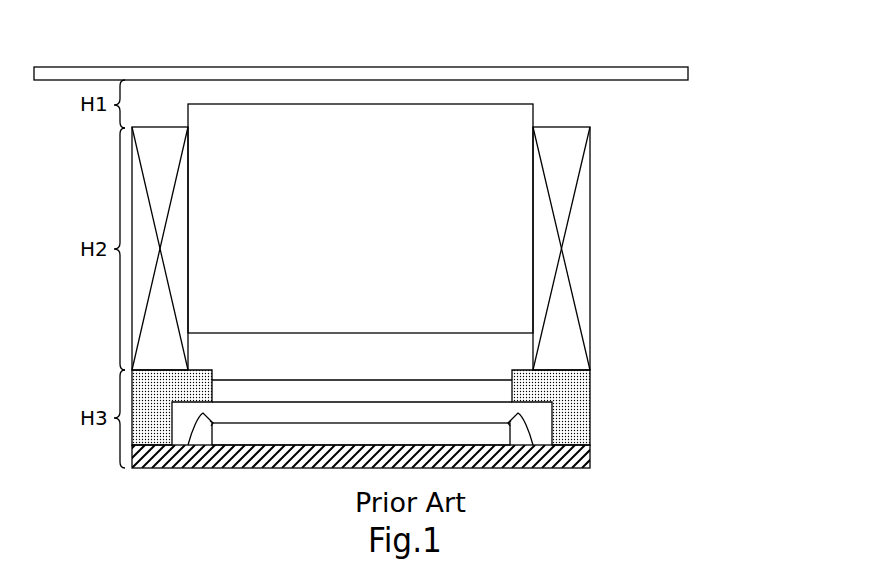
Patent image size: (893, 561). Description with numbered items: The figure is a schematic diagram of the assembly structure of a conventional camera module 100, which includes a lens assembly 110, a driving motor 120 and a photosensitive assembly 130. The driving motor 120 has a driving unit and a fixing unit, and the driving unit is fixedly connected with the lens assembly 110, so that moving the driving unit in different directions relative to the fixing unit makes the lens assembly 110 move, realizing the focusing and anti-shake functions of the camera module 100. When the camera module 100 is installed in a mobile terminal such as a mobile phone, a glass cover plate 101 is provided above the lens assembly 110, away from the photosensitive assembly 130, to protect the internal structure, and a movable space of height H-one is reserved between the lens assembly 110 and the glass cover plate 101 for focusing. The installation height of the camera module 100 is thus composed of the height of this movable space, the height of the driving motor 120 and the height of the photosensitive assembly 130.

The camera module 100 is at (442, 282).
The glass cover plate 101 is at (686, 76).
The lens assembly 110 is at (523, 109).
The driving motor 120 is at (572, 354).
The photosensitive assembly 130 is at (411, 407).